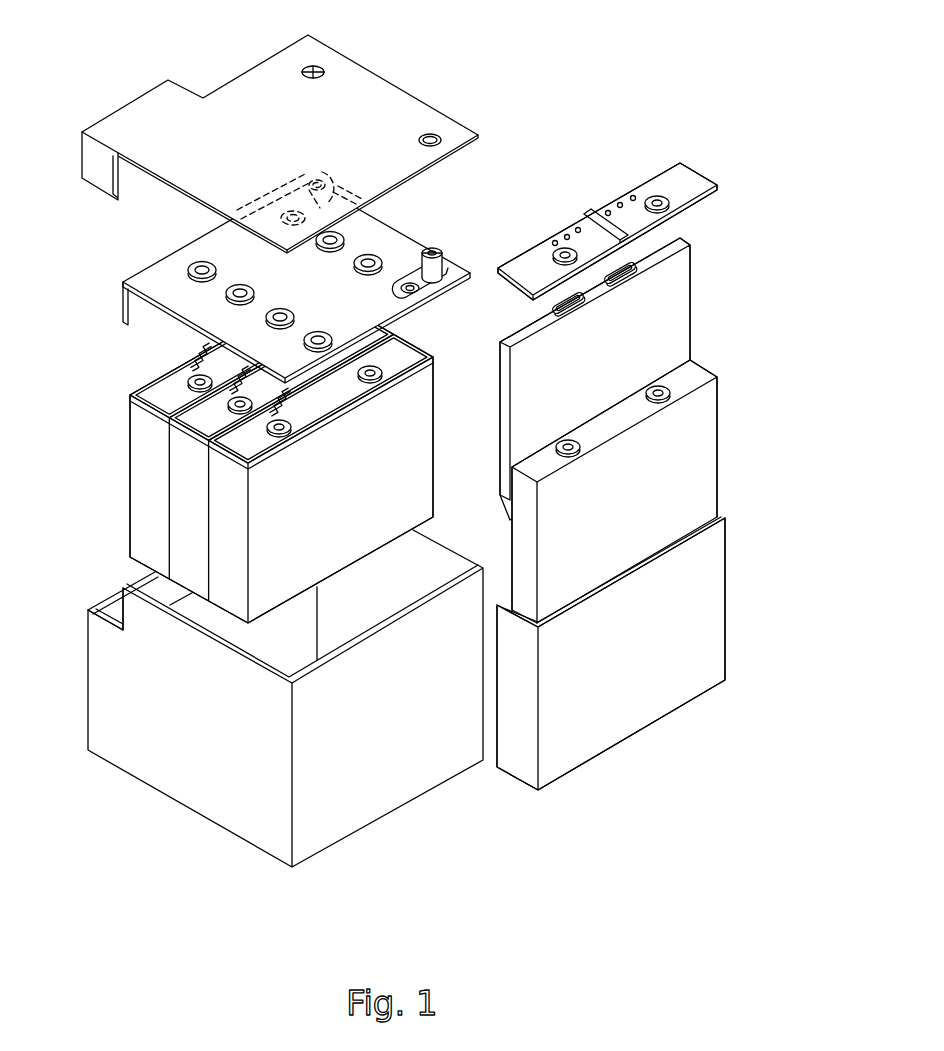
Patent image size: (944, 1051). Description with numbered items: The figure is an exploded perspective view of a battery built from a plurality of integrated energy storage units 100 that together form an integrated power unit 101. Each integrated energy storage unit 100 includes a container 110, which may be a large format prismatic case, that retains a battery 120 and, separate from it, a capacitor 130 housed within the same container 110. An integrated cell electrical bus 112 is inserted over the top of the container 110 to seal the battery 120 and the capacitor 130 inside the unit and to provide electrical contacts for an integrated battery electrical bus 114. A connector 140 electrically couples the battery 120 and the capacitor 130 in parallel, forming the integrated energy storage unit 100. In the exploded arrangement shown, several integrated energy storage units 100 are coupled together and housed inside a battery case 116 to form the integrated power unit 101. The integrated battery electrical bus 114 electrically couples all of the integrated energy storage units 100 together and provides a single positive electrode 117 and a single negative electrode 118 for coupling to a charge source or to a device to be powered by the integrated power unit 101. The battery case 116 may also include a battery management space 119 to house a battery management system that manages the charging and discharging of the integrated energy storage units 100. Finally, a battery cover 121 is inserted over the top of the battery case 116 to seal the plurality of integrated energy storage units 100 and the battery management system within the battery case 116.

The integrated energy storage unit 100 is at (129, 423).
The integrated power unit 101 is at (125, 905).
The container 110 is at (726, 604).
The integrated cell electrical bus 112 is at (672, 170).
The integrated battery electrical bus 114 is at (401, 231).
The battery case 116 is at (394, 810).
The positive electrode 117 is at (440, 246).
The negative electrode 118 is at (331, 183).
The battery management space 119 is at (87, 609).
The battery 120 is at (717, 462).
The battery cover 121 is at (258, 63).
The capacitor 130 is at (690, 293).
The connector 140 is at (792, 213).